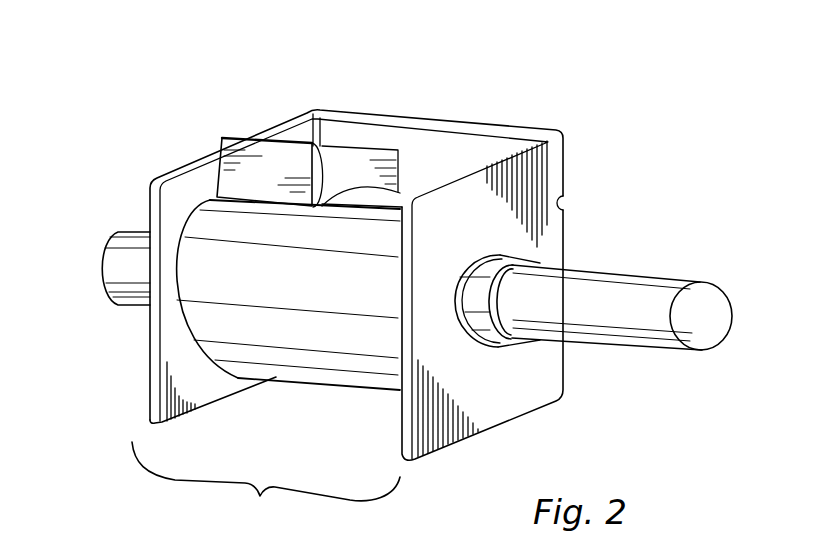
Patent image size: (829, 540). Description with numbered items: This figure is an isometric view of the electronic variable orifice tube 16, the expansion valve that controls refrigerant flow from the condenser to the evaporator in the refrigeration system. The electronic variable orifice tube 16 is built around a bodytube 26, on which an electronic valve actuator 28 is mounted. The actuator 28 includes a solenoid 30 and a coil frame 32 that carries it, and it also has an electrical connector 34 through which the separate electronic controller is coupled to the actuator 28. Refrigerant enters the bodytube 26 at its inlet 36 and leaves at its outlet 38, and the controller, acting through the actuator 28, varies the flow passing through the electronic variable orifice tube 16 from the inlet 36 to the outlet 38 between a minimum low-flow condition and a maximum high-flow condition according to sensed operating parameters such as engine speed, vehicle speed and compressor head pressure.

The electronic variable orifice tube 16 is at (549, 81).
The bodytube 26 is at (612, 300).
The electronic valve actuator 28 is at (266, 483).
The solenoid 30 is at (227, 230).
The coil frame 32 is at (405, 118).
The electrical connector 34 is at (268, 163).
The inlet 36 is at (737, 327).
The outlet 38 is at (88, 277).